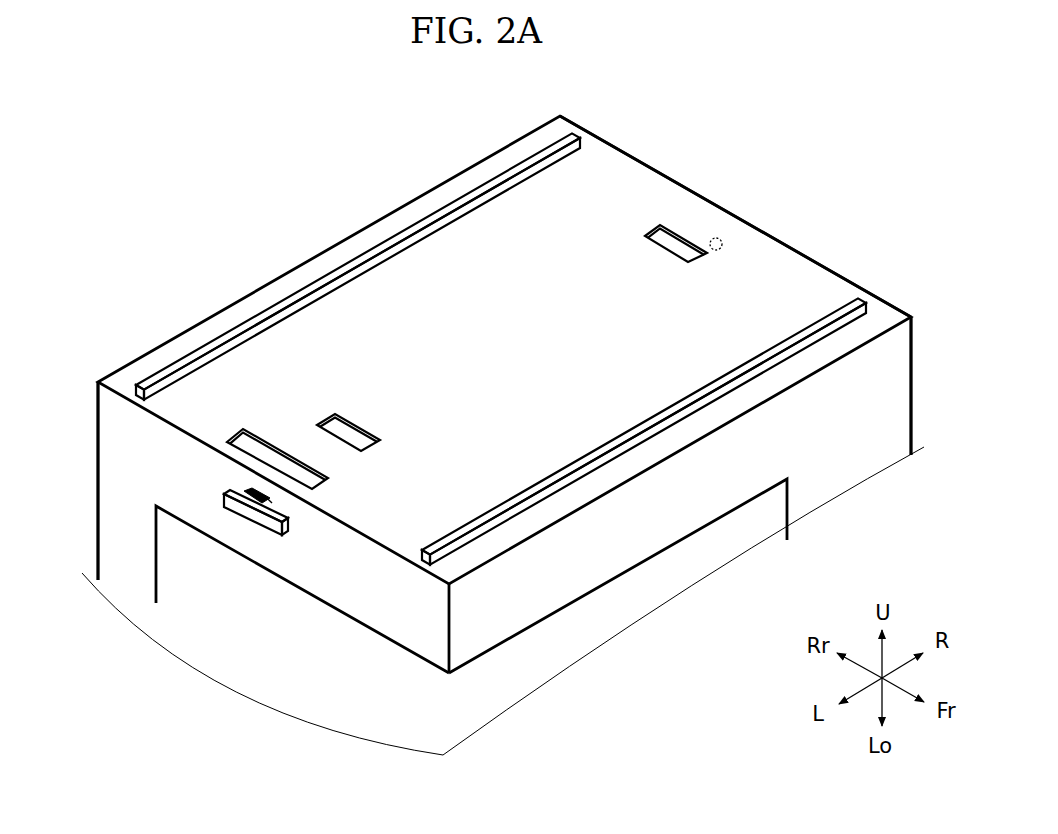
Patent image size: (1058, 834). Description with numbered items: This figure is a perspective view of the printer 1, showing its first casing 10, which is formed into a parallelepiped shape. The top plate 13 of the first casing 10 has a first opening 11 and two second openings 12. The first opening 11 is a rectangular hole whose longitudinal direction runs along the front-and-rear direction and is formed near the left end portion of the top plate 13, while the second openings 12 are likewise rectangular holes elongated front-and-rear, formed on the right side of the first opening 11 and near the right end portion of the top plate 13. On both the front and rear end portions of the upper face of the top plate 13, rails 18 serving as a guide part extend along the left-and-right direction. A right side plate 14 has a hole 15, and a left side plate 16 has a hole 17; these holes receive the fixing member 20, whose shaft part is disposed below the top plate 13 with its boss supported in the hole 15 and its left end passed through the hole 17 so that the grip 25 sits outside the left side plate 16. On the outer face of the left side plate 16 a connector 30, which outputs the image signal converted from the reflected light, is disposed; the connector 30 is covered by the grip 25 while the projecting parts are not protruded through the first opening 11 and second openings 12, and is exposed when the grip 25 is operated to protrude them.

The printer 1 is at (503, 435).
The first casing 10 is at (222, 302).
The first opening 11 is at (268, 430).
The second opening 12 is at (355, 416).
The top plate 13 is at (611, 180).
The right side plate 14 is at (862, 272).
The hole 15 is at (727, 244).
The left side plate 16 is at (140, 474).
The hole 17 is at (272, 502).
The rail 18 is at (453, 205).
The fixing member 20 is at (254, 535).
The grip 25 is at (261, 528).
The connector 30 is at (237, 490).